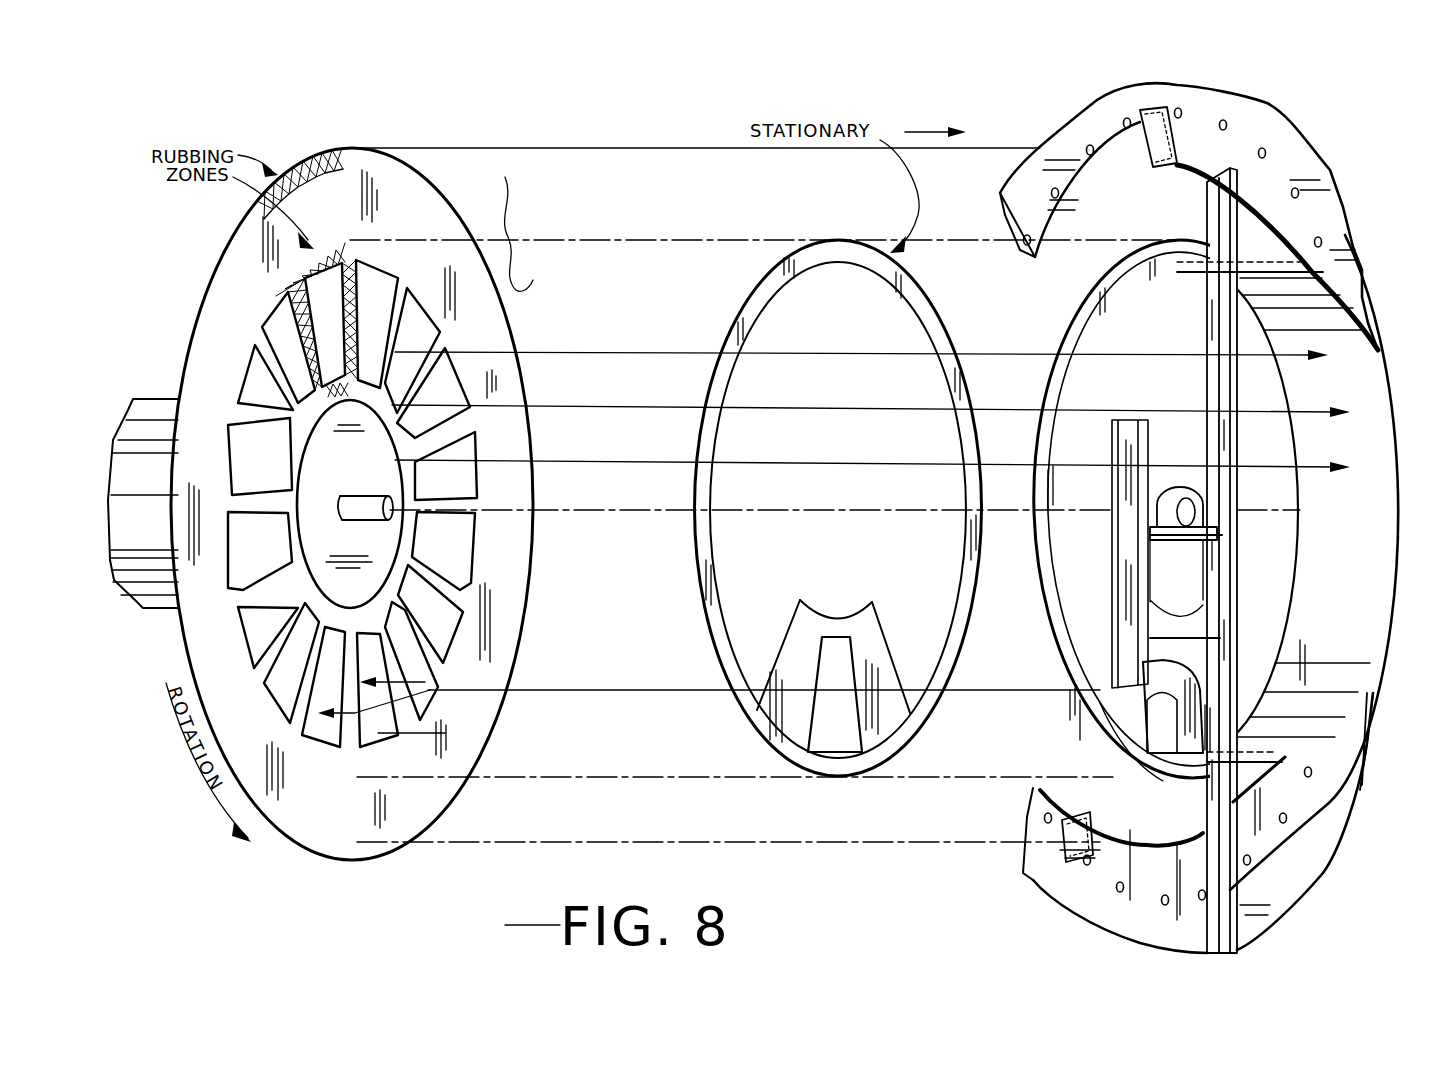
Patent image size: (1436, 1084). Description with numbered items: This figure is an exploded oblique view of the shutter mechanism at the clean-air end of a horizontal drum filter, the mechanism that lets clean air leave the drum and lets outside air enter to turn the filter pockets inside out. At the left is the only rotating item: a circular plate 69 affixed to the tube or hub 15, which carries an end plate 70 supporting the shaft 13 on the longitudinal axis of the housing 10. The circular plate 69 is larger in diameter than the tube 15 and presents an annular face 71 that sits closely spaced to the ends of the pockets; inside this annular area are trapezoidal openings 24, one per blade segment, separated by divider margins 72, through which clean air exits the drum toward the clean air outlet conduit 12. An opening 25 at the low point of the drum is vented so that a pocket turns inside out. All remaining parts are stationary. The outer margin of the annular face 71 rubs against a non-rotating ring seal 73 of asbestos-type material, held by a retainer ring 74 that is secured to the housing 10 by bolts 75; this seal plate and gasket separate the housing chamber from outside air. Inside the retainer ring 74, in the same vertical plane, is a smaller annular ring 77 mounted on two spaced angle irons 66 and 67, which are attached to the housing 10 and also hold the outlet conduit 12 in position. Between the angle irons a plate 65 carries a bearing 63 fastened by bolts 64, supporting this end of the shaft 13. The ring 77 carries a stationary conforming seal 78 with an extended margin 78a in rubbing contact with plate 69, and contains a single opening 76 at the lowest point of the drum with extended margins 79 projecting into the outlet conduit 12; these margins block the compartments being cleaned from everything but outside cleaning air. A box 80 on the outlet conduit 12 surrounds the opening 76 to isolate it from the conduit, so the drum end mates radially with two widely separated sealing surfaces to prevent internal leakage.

The housing 10 is at (1083, 125).
The clean air outlet conduit 12 is at (1375, 423).
The shaft 13 is at (352, 523).
The tube or hub 15 is at (152, 606).
The openings 24 is at (377, 293).
The opening 25 is at (372, 742).
The bearing 63 is at (1169, 487).
The bolts 64 is at (1153, 520).
The plate 65 is at (1187, 545).
The angle iron 66 is at (1123, 598).
The angle iron 67 is at (1207, 305).
The circular plate 69 is at (536, 234).
The end plate 70 is at (368, 464).
The annular face 71 is at (318, 153).
The divider margins 72 is at (298, 293).
The ring seal 73 is at (1067, 860).
The retainer ring 74 is at (1350, 755).
The bolts 75 is at (1276, 147).
The opening 76 is at (830, 733).
The annular ring 77 is at (1082, 316).
The seal 78 is at (700, 556).
The extended margin 78a is at (807, 617).
The extended margins 79 is at (1102, 733).
The box 80 is at (1200, 657).